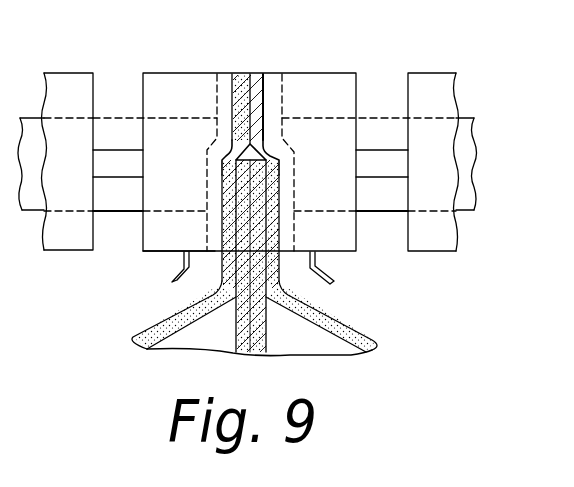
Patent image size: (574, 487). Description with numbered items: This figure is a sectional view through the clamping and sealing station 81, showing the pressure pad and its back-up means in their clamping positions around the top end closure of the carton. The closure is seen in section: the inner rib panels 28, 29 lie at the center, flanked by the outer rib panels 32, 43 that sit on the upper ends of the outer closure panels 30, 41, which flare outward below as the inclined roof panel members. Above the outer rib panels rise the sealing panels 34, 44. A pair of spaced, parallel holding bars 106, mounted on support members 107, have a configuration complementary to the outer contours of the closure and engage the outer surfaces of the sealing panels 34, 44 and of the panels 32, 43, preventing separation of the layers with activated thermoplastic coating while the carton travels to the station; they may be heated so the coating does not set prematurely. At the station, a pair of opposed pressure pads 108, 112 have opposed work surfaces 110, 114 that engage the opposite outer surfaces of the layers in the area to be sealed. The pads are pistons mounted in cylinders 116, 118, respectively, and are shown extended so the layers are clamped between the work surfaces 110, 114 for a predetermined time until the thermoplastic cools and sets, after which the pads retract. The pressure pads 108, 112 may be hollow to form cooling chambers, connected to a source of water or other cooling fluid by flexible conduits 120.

The inner rib panel 28 is at (245, 192).
The inner rib panel 29 is at (280, 163).
The outer closure panel 30 is at (349, 323).
The outer rib panel 32 is at (272, 196).
The sealing panel 34 is at (240, 73).
The outer closure panel 41 is at (140, 338).
The outer rib panel 43 is at (230, 203).
The sealing panel 44 is at (256, 73).
The clamping and sealing station 81 is at (252, 58).
The holding bars 106 is at (217, 100).
The support members 107 is at (33, 214).
The pressure pad 108 is at (356, 73).
The work surface 110 is at (265, 127).
The pressure pad 112 is at (143, 252).
The work surface 114 is at (222, 160).
The cylinder 116 is at (439, 80).
The cylinder 118 is at (71, 75).
The conduits 120 is at (170, 281).